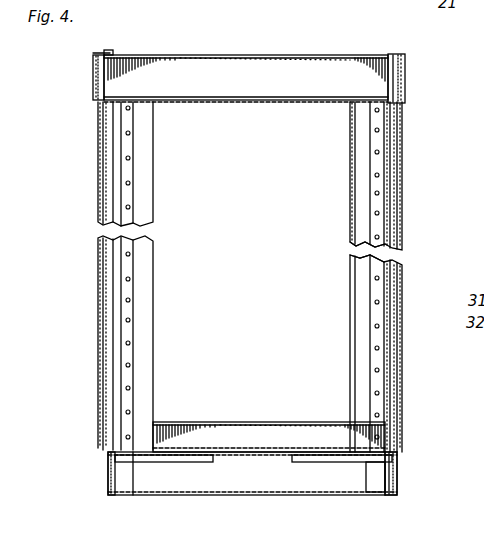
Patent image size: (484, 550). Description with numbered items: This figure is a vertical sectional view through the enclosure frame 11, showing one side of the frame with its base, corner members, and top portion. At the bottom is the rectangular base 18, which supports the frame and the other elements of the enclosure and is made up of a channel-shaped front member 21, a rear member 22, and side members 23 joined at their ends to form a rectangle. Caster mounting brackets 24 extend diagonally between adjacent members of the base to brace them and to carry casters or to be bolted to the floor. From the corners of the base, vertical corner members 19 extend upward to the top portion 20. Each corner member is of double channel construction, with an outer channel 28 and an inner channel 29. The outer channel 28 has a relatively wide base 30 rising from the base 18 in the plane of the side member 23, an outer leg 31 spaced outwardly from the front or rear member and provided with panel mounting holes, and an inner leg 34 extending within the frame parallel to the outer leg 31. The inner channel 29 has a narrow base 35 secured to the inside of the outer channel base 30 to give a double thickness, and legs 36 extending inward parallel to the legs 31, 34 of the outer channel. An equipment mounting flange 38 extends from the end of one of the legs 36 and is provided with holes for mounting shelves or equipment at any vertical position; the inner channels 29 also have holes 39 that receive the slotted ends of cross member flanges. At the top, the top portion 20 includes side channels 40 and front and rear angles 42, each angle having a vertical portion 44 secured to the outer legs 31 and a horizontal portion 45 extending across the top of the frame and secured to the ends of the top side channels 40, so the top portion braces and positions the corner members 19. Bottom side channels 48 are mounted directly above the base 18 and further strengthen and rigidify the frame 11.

The frame 11 is at (436, 124).
The rectangular base 18 is at (372, 477).
The vertical corner member 19 is at (403, 210).
The top portion 20 is at (405, 66).
The front member 21 is at (396, 480).
The rear member 22 is at (106, 462).
The side member 23 is at (246, 498).
The caster mounting bracket 24 is at (168, 462).
The outer channel 28 is at (354, 143).
The inner channel 29 is at (381, 155).
The base of outer channel 30 is at (360, 192).
The outer leg 31 is at (388, 197).
The inner leg 34 is at (352, 116).
The narrow base 35 is at (394, 208).
The leg of inner channel 36 is at (396, 232).
The equipment mounting flange 38 is at (382, 232).
The hole 39 is at (375, 214).
The side channel 40 is at (240, 98).
The front and rear angle 42 is at (97, 52).
The vertical portion 44 is at (96, 85).
The horizontal portion 45 is at (110, 52).
The bottom side channel 48 is at (246, 420).